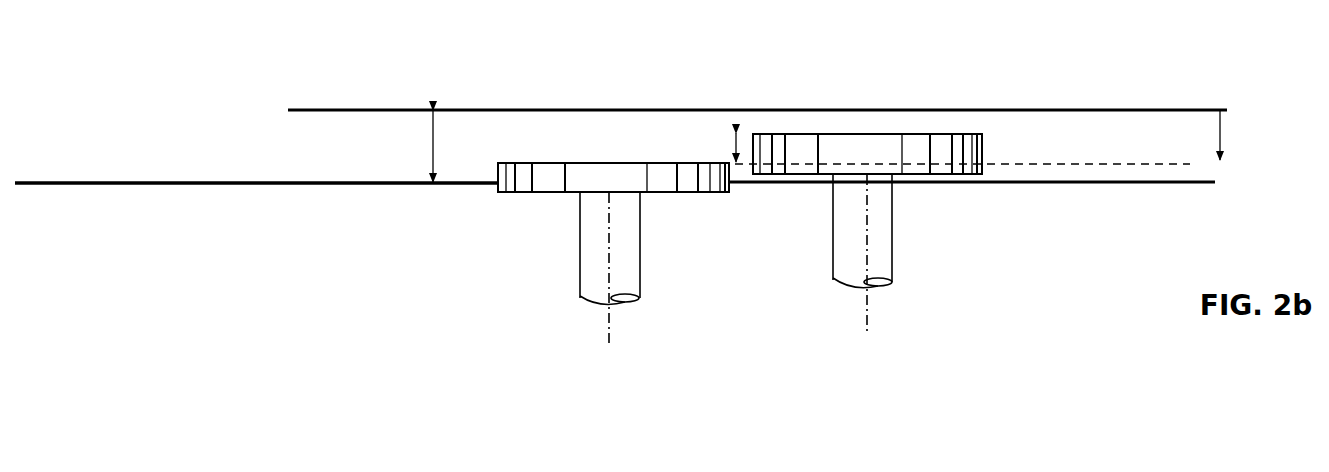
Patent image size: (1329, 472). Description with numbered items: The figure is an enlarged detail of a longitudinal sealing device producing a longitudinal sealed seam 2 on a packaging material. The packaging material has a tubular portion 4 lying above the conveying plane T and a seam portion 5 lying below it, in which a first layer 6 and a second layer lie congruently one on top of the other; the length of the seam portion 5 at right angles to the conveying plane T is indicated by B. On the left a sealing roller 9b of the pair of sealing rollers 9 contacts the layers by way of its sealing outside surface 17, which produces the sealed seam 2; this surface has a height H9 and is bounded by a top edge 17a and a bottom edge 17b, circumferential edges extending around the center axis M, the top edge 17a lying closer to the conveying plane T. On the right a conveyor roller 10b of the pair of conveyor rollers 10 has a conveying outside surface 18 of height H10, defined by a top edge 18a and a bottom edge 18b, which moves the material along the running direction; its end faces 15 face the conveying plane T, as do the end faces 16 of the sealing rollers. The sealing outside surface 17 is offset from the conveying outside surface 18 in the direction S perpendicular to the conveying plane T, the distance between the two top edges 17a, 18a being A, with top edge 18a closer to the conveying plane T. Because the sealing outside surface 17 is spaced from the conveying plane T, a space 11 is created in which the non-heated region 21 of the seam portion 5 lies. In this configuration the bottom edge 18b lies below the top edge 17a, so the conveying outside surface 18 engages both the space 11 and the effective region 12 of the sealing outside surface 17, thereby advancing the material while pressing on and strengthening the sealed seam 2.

The longitudinal sealed seam 2 is at (1027, 177).
The tubular portion 4 is at (1118, 97).
The seam portion 5 is at (963, 128).
The first layer 6 is at (256, 224).
The pair of sealing rollers 9 is at (574, 173).
The sealing roller 9b is at (580, 184).
The pair of conveyor rollers 10 is at (932, 188).
The conveyor roller 10b is at (942, 170).
The space 11 is at (635, 137).
The effective region 12 is at (620, 168).
The end faces 15 is at (867, 134).
The end faces 16 is at (708, 162).
The sealing outside surface 17 is at (570, 172).
The top edge 17a is at (555, 165).
The bottom edge 17b is at (513, 193).
The conveying outside surface 18 is at (882, 163).
The top edge 18a is at (938, 133).
The bottom edge 18b is at (958, 175).
The non-heated region 21 is at (807, 130).
The distance A is at (741, 160).
The length B is at (433, 152).
The height H9 is at (493, 177).
The height H10 is at (982, 165).
The center axis M is at (608, 320).
The direction S is at (1220, 135).
The conveying plane T is at (692, 110).